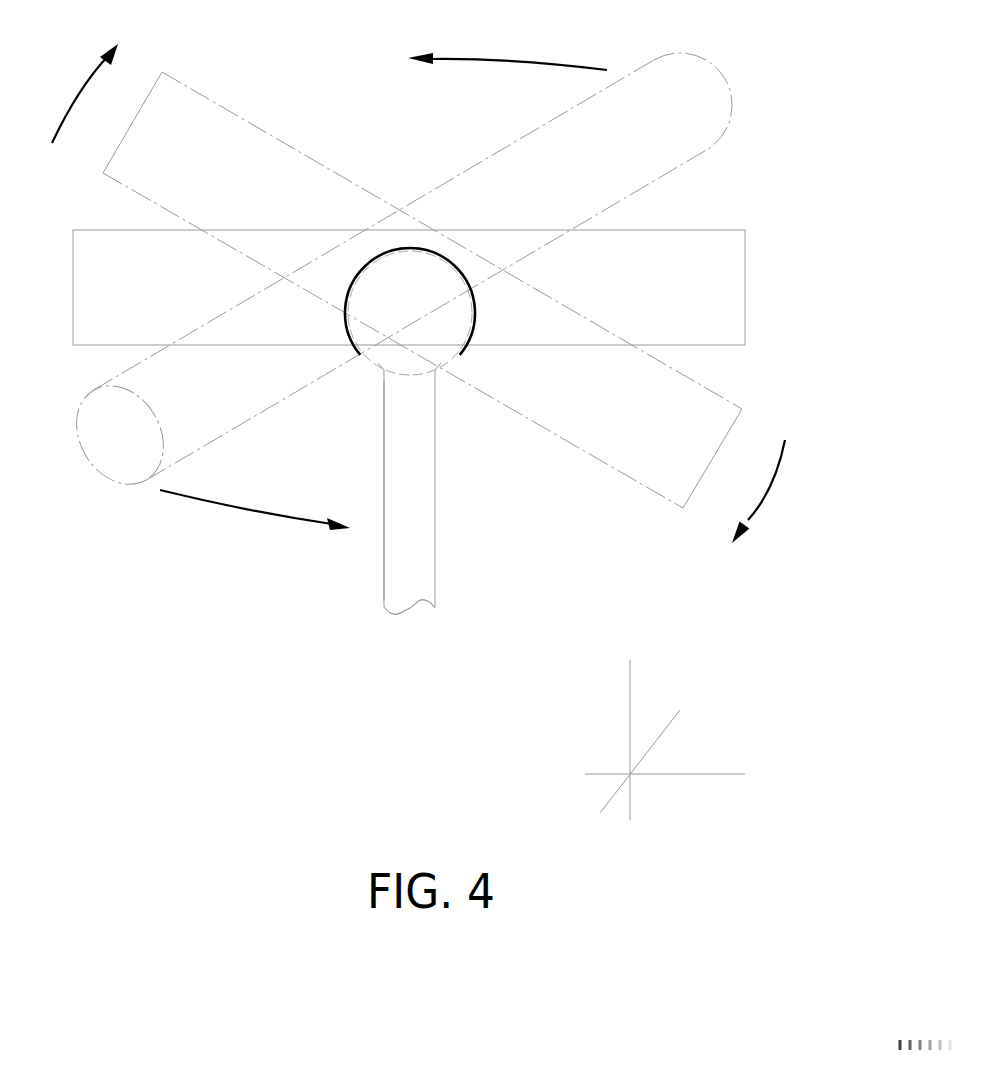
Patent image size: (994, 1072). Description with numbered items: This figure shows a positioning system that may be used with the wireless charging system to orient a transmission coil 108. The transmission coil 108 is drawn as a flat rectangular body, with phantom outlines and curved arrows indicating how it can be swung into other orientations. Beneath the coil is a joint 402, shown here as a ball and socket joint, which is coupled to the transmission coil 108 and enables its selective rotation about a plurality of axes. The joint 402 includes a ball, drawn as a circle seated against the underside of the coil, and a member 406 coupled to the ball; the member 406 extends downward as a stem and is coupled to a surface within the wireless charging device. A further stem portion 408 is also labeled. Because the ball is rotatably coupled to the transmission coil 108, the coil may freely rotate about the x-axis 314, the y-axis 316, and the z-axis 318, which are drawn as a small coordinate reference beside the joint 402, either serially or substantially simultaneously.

The transmission coil 108 is at (745, 262).
The joint 402 is at (456, 486).
The member 406 is at (384, 332).
The shaft 408 is at (397, 567).
The x-axis 314 is at (707, 774).
The y-axis 316 is at (671, 721).
The z-axis 318 is at (630, 680).